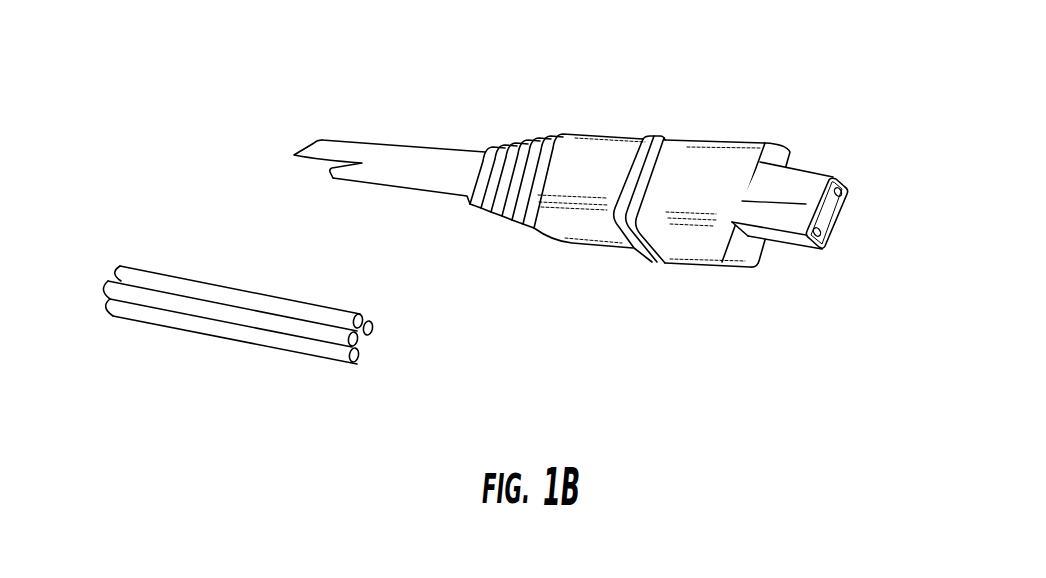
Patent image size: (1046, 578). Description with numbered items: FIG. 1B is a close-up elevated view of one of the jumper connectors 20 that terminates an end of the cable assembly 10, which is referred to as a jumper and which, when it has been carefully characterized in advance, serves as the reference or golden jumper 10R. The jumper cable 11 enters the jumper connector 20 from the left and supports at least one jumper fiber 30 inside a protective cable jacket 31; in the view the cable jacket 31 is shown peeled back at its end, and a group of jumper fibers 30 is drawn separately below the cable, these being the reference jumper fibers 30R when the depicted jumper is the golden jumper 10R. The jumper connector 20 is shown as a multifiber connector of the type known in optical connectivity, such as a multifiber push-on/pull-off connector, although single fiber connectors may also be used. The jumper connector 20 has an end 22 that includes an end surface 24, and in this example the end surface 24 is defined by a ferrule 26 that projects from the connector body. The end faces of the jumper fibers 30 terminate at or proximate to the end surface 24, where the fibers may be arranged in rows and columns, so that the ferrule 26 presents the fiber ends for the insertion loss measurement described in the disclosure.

The cable assembly 10 is at (617, 181).
The reference jumper 10R is at (617, 181).
The jumper cable 11 is at (428, 158).
The jumper connector 20 is at (701, 181).
The end 22 is at (832, 243).
The end surface 24 is at (837, 210).
The ferrule 26 is at (805, 196).
The jumper fiber 30 is at (247, 338).
The reference jumper fiber 30R is at (238, 282).
The cable jacket 31 is at (382, 160).